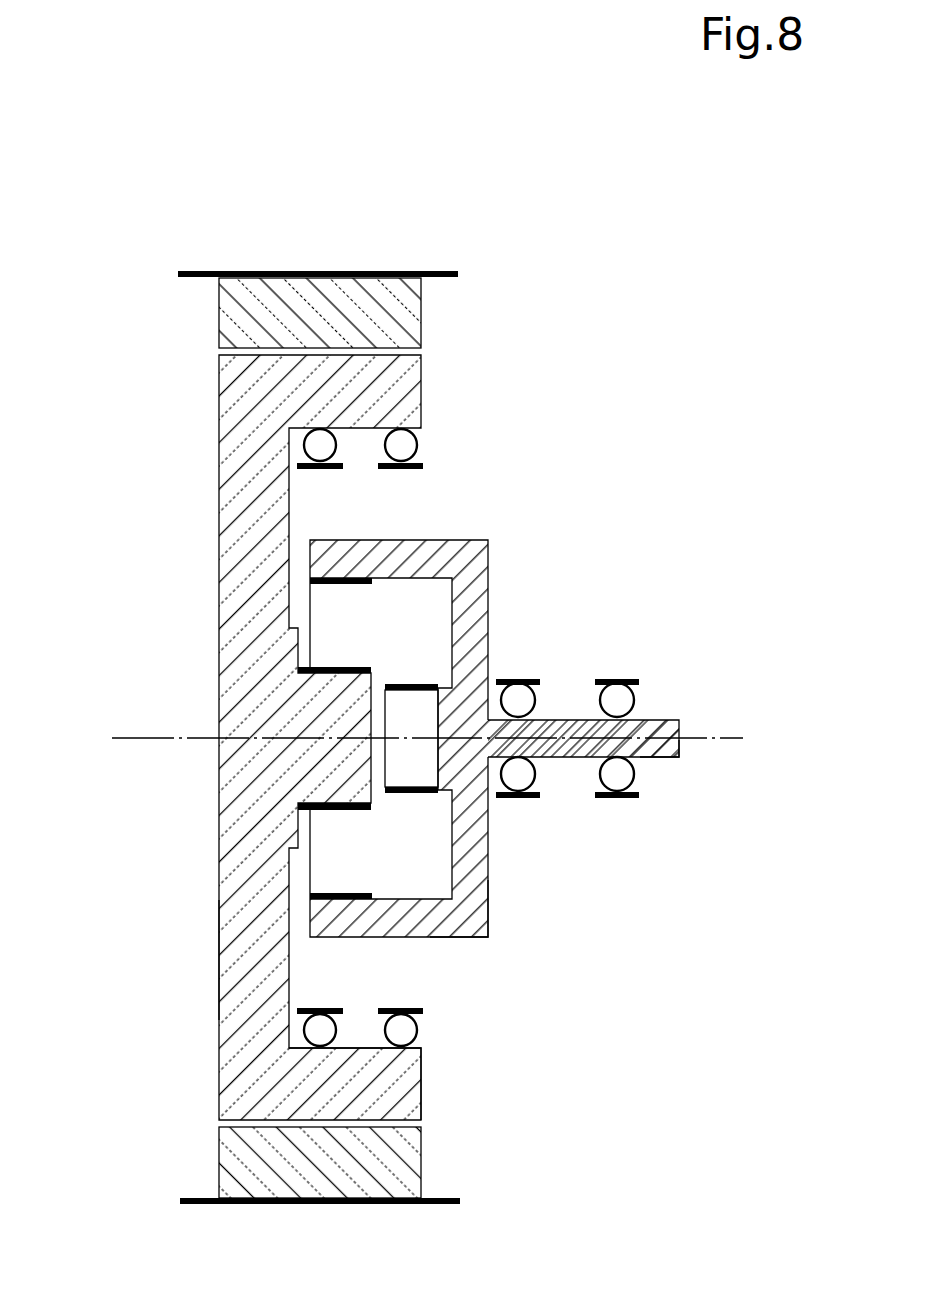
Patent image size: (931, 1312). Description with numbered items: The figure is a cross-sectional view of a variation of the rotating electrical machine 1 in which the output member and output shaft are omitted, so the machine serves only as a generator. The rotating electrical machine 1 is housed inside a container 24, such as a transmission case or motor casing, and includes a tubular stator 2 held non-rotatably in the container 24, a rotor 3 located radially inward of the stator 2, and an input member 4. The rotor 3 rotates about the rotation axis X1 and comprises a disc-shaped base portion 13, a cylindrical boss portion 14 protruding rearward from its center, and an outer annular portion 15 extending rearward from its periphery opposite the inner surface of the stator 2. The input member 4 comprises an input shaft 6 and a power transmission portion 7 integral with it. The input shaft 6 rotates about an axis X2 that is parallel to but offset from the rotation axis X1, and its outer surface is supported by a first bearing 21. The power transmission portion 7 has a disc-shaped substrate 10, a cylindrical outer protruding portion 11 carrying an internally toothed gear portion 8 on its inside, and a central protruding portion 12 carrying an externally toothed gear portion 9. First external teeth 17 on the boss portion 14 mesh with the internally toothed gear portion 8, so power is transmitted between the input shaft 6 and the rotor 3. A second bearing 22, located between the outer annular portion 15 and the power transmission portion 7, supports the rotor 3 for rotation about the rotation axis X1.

The rotating electrical machine 1 is at (150, 353).
The stator 2 is at (220, 315).
The rotor 3 is at (208, 436).
The input member 4 is at (662, 705).
The input shaft 6 is at (656, 758).
The power transmission portion 7 is at (507, 542).
The internally toothed gear portion 8 is at (385, 584).
The externally toothed gear portion 9 is at (413, 683).
The substrate 10 is at (488, 917).
The outer protruding portion 11 is at (375, 938).
The central protruding portion 12 is at (413, 775).
The base portion 13 is at (219, 960).
The boss portion 14 is at (345, 800).
The outer annular portion 15 is at (421, 1068).
The first external teeth 17 is at (326, 667).
The first bearing 21 is at (617, 697).
The second bearing 22 is at (402, 445).
The container 24 is at (442, 1198).
The rotation axis X1 is at (160, 741).
The axis X2 is at (727, 736).